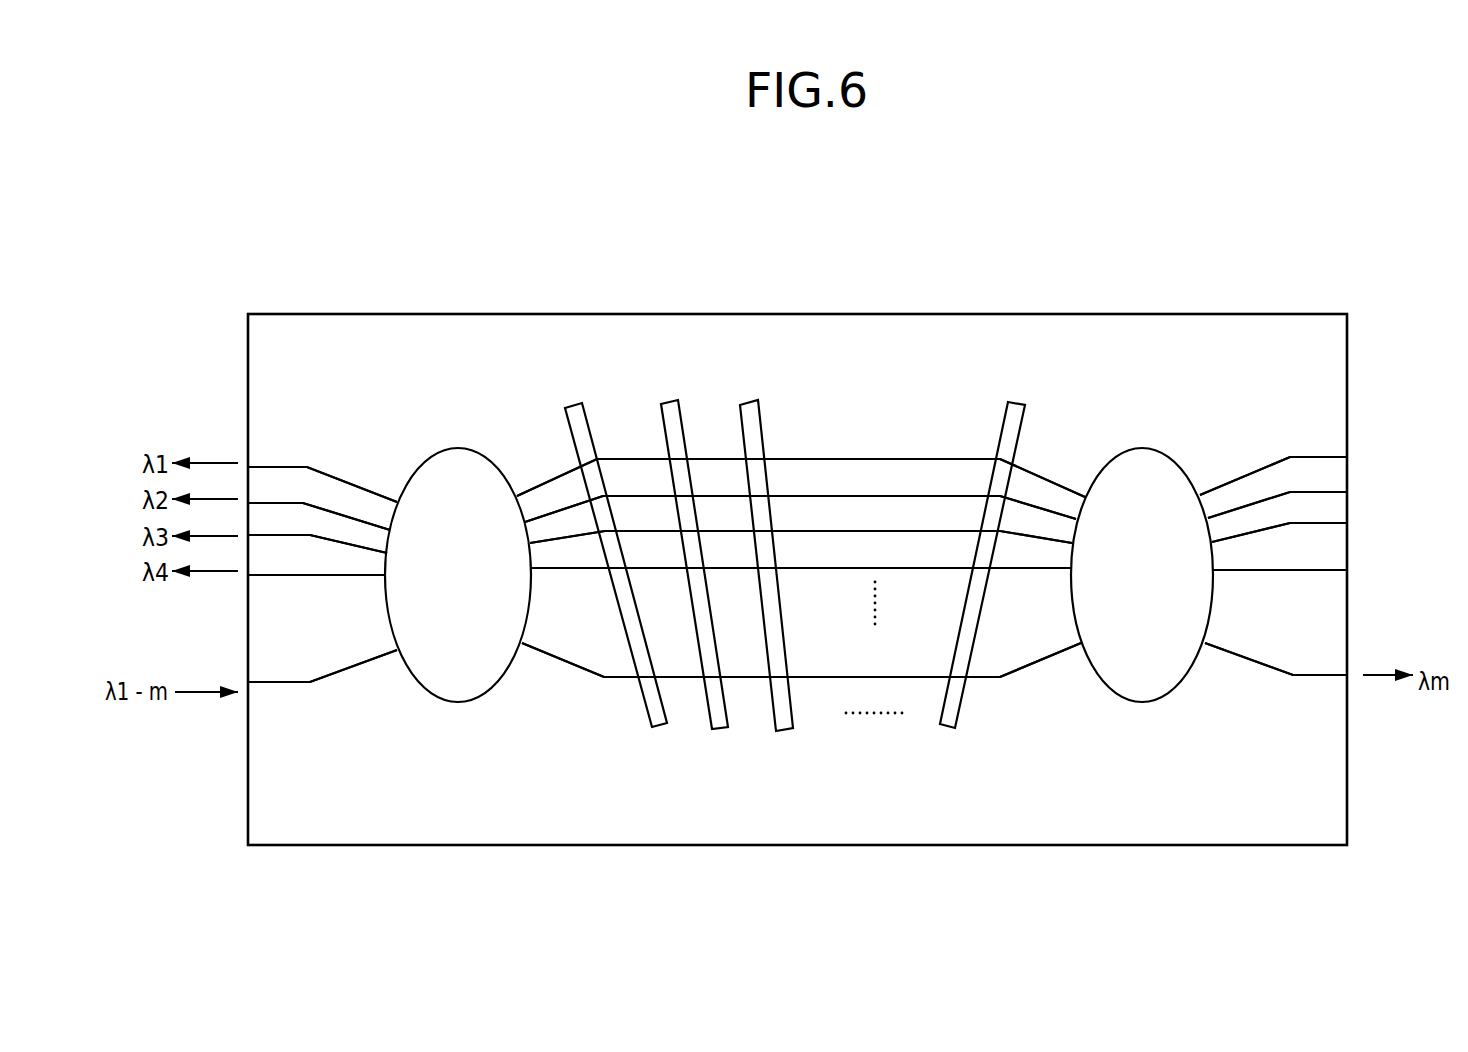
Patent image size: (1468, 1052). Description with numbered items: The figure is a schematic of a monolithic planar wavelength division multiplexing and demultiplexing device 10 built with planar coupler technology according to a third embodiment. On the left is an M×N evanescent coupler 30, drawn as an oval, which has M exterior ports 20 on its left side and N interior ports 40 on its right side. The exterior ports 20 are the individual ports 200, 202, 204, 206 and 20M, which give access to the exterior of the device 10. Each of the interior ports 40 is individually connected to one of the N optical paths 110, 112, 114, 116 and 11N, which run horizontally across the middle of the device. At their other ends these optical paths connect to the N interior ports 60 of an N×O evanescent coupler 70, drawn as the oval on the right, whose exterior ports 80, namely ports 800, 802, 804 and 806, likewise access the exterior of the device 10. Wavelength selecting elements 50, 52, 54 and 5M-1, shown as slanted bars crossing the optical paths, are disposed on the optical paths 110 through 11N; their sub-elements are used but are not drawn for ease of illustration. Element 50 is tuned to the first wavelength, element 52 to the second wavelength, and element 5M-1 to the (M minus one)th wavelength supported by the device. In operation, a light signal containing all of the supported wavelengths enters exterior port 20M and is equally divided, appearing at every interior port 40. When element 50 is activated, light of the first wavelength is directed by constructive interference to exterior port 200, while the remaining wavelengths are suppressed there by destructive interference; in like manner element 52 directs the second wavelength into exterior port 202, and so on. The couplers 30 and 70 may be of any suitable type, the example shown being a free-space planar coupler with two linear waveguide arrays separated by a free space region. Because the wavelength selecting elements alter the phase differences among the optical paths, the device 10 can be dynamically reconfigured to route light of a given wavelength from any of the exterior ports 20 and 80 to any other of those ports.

The monolithic planar device 10 is at (778, 265).
The exterior ports 20 is at (382, 447).
The M×N evanescent coupler 30 is at (457, 460).
The interior ports 40 is at (527, 458).
The wavelength selecting element 50 is at (657, 728).
The wavelength selecting element 52 is at (717, 729).
The wavelength selecting element 54 is at (784, 732).
The wavelength selecting element 5M-1 is at (948, 729).
The interior ports 60 is at (1068, 457).
The N×O evanescent coupler 70 is at (1143, 467).
The exterior ports 80 is at (1240, 685).
The optical path 110 is at (801, 463).
The optical path 112 is at (800, 494).
The optical path 114 is at (801, 522).
The optical path 116 is at (801, 552).
The optical path 11N is at (801, 661).
The exterior port 200 is at (322, 470).
The exterior port 202 is at (319, 501).
The exterior port 204 is at (317, 530).
The exterior port 206 is at (316, 560).
The exterior port 20M is at (322, 665).
The exterior port 800 is at (1273, 552).
The exterior port 802 is at (1277, 491).
The exterior port 804 is at (1279, 518).
The exterior port 806 is at (1280, 556).